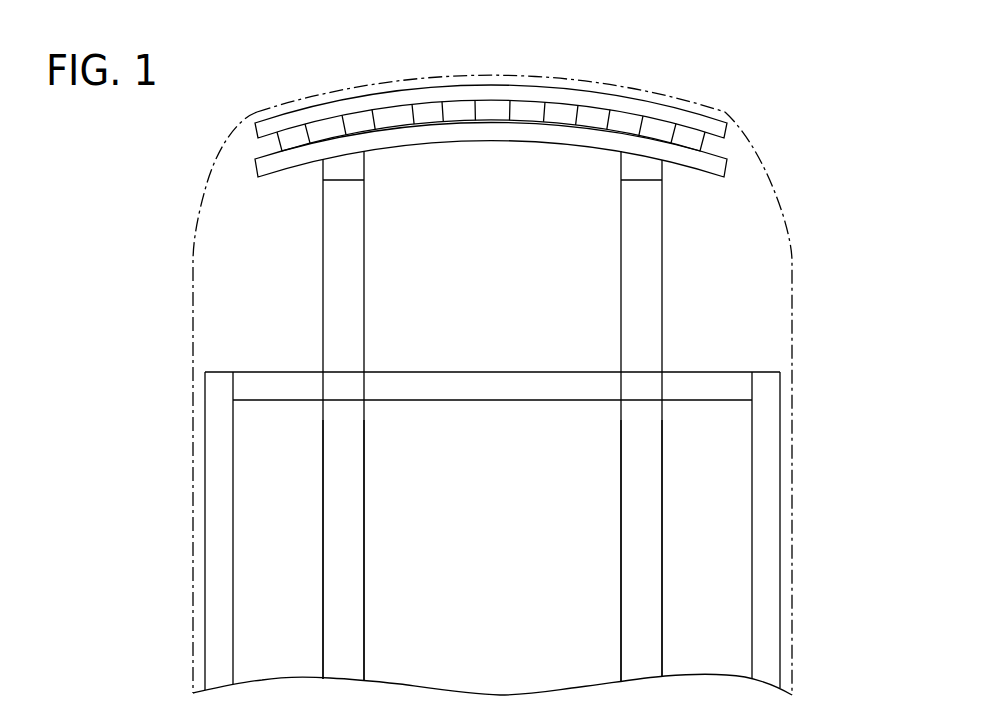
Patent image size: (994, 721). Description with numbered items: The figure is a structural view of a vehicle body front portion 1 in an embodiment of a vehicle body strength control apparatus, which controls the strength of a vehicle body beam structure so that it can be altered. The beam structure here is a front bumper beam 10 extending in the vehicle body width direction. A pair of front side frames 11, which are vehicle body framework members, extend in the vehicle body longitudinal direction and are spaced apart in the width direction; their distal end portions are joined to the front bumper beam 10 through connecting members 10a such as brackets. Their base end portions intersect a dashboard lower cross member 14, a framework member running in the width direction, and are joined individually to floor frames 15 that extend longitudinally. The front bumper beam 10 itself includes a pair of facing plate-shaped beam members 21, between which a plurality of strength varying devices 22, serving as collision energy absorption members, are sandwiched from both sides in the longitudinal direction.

The vehicle body front portion 1 is at (738, 44).
The front bumper beam 10 is at (490, 142).
The connecting member 10a is at (345, 172).
The front side frame 11 is at (365, 260).
The dashboard lower cross member 14 is at (512, 402).
The floor frame 15 is at (365, 537).
The plate-shaped beam member 21 is at (718, 132).
The strength varying device 22 is at (270, 126).